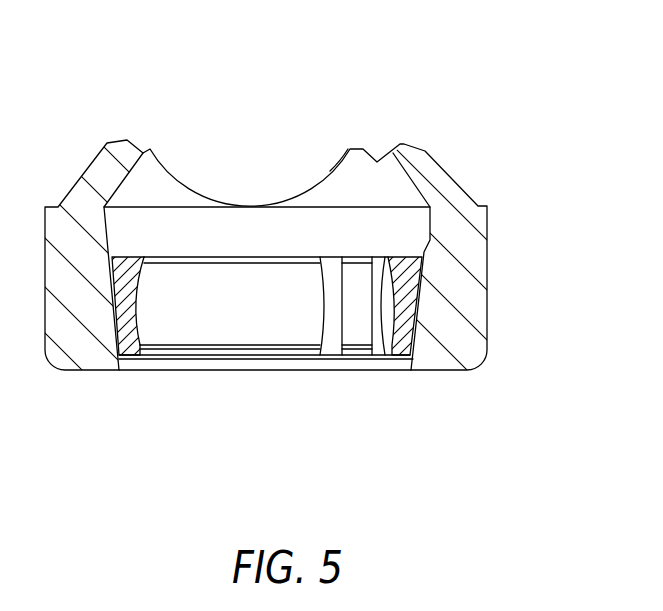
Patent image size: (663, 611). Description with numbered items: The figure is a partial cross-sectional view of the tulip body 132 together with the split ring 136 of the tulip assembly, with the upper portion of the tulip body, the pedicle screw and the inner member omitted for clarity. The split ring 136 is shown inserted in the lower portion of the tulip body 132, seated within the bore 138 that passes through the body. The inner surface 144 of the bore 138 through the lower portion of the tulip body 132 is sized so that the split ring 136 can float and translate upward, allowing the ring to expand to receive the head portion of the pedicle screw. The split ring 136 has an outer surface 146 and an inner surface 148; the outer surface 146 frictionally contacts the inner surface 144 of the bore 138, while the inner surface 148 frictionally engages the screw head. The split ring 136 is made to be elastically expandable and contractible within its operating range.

The tulip body 132 is at (487, 270).
The split ring 136 is at (398, 359).
The bore 138 is at (248, 380).
The inner surface 144 is at (103, 214).
The outer surface 146 is at (111, 273).
The inner surface 148 is at (139, 302).